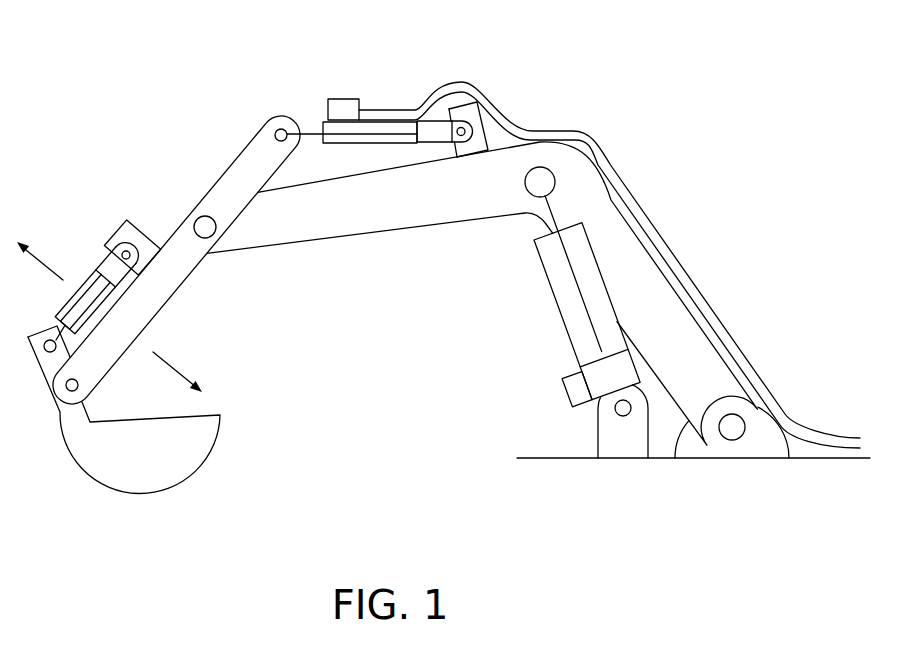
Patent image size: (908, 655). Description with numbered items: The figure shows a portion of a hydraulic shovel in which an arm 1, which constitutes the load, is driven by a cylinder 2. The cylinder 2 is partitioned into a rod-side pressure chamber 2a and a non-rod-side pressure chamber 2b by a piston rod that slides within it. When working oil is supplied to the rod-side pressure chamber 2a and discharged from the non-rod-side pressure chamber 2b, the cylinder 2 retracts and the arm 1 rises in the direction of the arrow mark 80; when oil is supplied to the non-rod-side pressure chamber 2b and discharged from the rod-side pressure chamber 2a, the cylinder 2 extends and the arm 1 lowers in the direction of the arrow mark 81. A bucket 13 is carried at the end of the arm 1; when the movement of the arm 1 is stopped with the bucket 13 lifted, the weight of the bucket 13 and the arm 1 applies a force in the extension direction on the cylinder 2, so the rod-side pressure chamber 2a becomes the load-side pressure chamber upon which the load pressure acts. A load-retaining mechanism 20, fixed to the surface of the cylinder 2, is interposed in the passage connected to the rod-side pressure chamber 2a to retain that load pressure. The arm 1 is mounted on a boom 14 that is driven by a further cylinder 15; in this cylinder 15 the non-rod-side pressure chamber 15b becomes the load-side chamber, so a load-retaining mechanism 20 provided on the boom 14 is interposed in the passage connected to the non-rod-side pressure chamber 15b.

The arm 1 is at (230, 170).
The cylinder 2 is at (364, 177).
The rod-side pressure chamber 2a is at (355, 140).
The non-rod-side pressure chamber 2b is at (435, 137).
The bucket 13 is at (202, 462).
The boom 14 is at (693, 357).
The cylinder 15 is at (556, 312).
The non-rod-side pressure chamber 15b is at (605, 375).
The load-retaining mechanism 20 is at (335, 99).
The arrow mark 80 is at (45, 265).
The arrow mark 81 is at (170, 366).